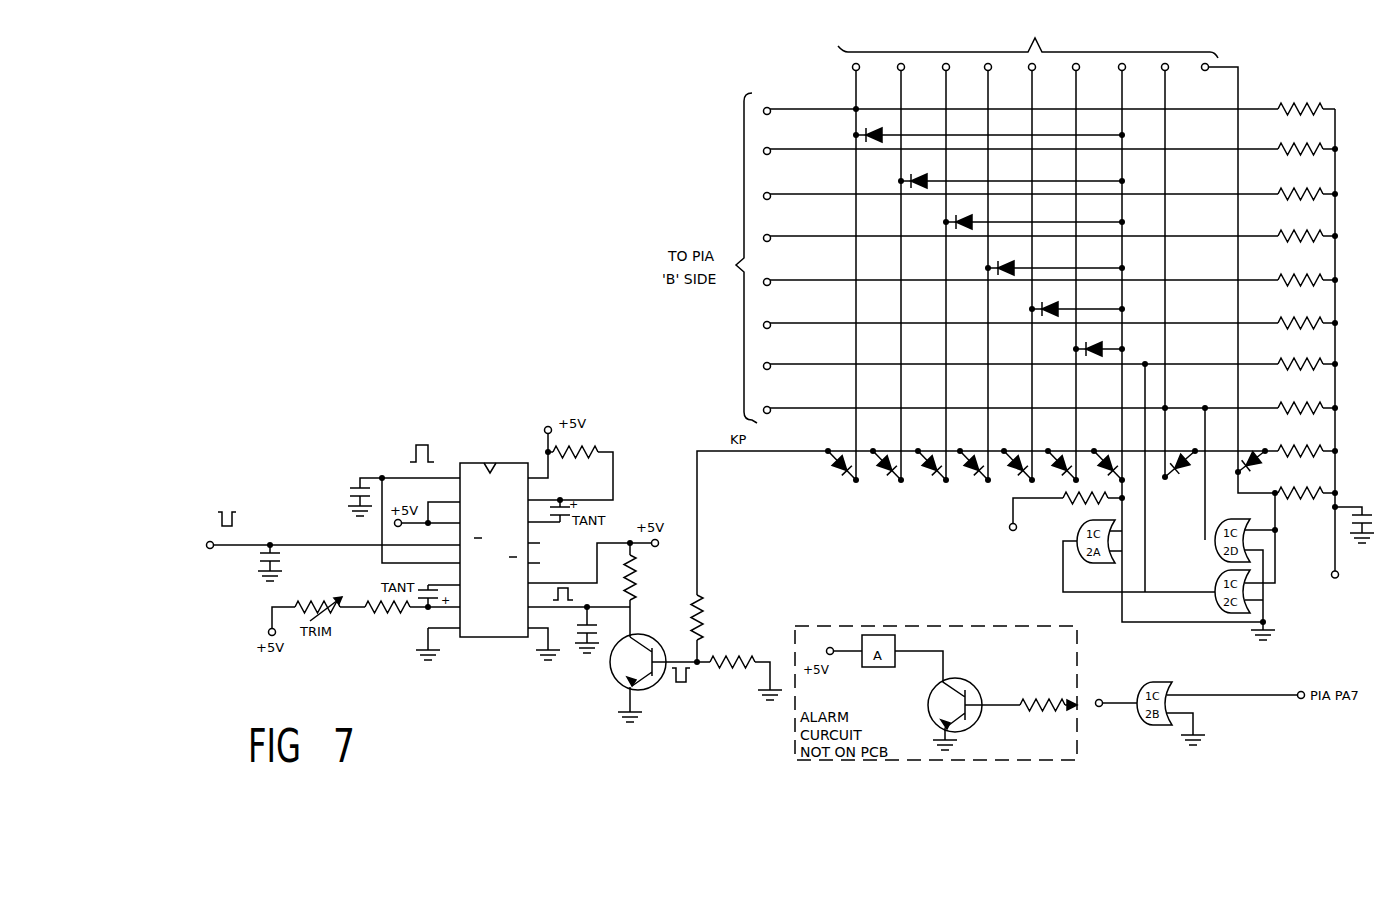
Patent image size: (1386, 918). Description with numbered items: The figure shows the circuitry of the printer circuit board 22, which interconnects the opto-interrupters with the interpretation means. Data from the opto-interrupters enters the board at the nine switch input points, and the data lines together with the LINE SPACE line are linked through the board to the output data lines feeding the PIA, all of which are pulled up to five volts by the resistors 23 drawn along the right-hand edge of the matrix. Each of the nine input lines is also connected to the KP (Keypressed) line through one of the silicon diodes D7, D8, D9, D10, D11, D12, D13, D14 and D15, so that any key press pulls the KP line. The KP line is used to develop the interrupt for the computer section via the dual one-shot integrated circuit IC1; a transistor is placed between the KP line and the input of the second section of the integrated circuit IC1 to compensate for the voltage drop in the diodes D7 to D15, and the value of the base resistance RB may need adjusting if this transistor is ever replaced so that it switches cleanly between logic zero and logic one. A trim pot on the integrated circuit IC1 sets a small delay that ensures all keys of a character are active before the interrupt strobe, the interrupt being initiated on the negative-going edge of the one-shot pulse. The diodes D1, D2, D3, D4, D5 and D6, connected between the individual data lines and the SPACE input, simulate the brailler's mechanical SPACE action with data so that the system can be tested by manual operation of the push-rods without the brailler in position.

The printer circuit board 22 is at (1247, 95).
The resistors 23 is at (1344, 263).
The dual 'One Shot' integrated circuit IC1 is at (494, 539).
The resistance RB is at (709, 623).
The diode D1 is at (989, 129).
The diode D2 is at (1011, 175).
The diode D3 is at (1034, 216).
The diode D4 is at (1055, 262).
The diode D5 is at (1077, 303).
The diode D6 is at (1099, 343).
The silicon diode D7 is at (838, 470).
The silicon diode D8 is at (883, 470).
The silicon diode D9 is at (928, 470).
The silicon diode D10 is at (968, 470).
The silicon diode D11 is at (1012, 470).
The silicon diode D12 is at (1056, 470).
The silicon diode D13 is at (1101, 470).
The silicon diode D14 is at (1180, 470).
The silicon diode D15 is at (1256, 470).